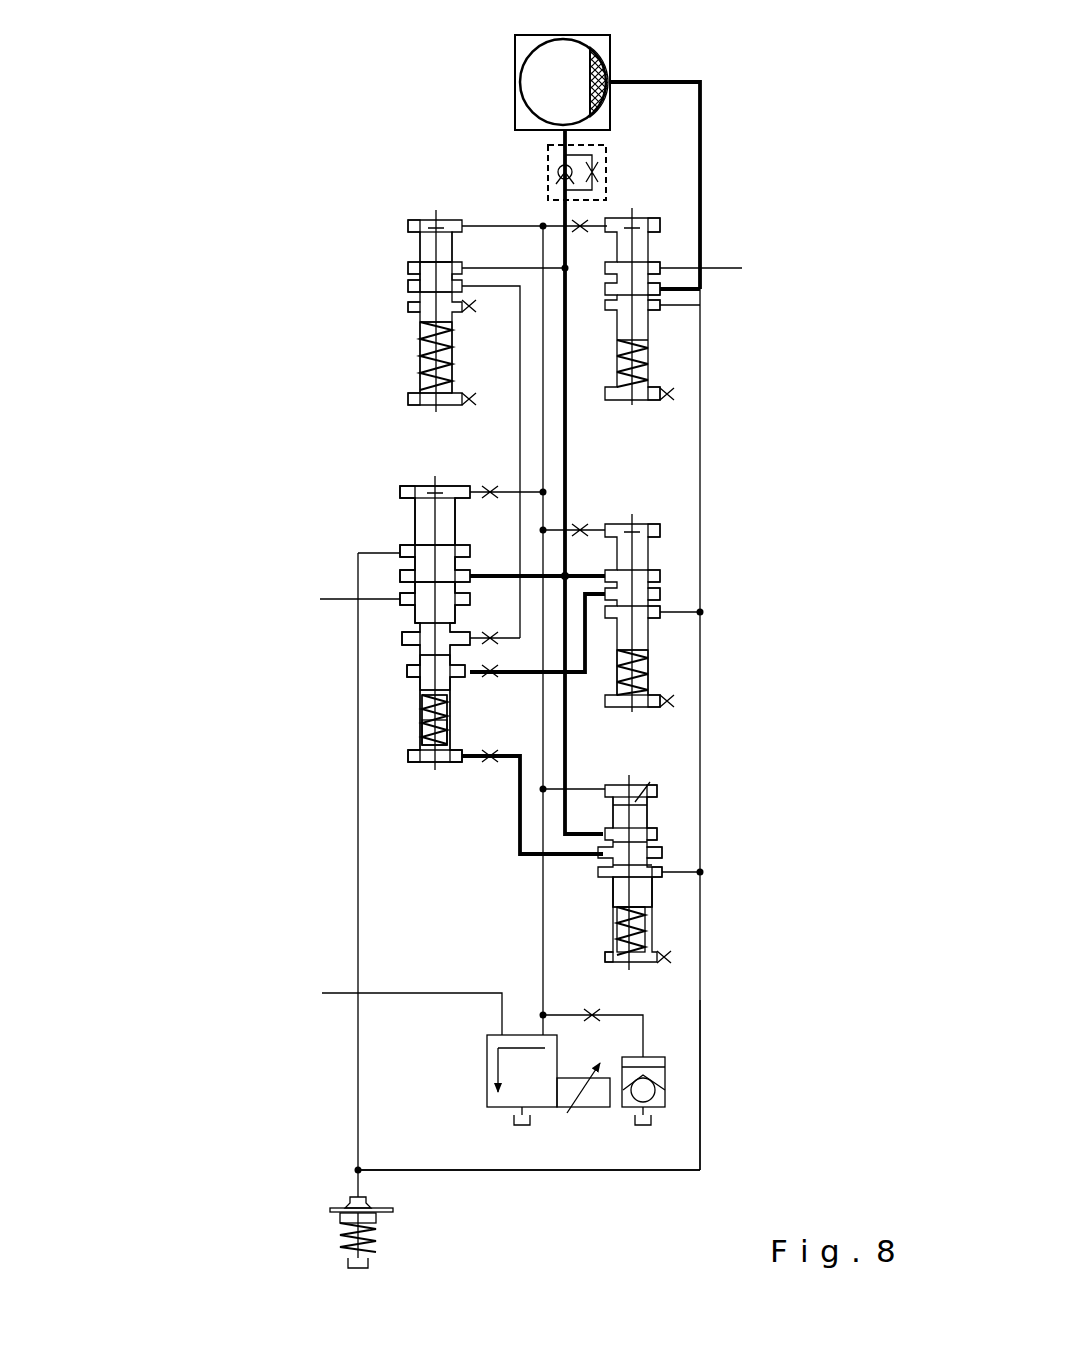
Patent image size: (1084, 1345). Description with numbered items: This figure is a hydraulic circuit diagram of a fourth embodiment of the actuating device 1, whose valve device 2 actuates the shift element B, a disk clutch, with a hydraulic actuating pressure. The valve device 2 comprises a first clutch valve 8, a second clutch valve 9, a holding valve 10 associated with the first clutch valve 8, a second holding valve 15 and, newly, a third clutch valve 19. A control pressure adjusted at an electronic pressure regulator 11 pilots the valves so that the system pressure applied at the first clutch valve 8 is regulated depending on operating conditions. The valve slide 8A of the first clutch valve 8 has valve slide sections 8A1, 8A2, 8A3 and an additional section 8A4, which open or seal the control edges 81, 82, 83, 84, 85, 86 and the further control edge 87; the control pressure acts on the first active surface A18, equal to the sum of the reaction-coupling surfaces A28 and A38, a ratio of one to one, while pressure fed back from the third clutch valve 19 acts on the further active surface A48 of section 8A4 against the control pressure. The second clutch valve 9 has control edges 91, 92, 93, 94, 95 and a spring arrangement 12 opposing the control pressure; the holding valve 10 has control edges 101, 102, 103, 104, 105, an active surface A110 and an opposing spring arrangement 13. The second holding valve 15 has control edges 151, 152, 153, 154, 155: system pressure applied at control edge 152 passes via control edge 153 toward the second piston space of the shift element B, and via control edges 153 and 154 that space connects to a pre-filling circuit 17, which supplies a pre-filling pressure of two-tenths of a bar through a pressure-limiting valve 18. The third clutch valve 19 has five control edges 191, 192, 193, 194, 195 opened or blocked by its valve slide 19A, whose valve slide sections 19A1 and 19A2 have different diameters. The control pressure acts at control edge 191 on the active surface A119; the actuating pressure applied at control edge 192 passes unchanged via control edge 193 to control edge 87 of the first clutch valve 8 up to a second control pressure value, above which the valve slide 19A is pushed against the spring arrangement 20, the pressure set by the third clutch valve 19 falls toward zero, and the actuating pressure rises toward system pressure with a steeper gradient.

The actuating device 1 is at (118, 90).
The valve device 2 is at (383, 275).
The first clutch valve 8 is at (350, 692).
The valve slide 8A is at (407, 615).
The valve slide section 8A1 is at (413, 543).
The valve slide section 8A2 is at (405, 598).
The valve slide section 8A3 is at (420, 688).
The additional valve slide section 8A4 is at (427, 740).
The second clutch valve 9 is at (657, 668).
The holding valve 10 is at (400, 347).
The electronic pressure regulator 11 is at (493, 1058).
The spring arrangement 12 is at (645, 712).
The spring arrangement 13 is at (418, 366).
The second holding valve 15 is at (668, 328).
The pre-filling circuit 17 is at (462, 1166).
The pressure-limiting valve 18 is at (342, 1196).
The third clutch valve 19 is at (706, 922).
The valve slide 19A is at (660, 963).
The valve slide section 19A1 is at (657, 835).
The valve slide section 19A2 is at (615, 895).
The spring arrangement 20 is at (666, 1058).
The control edge 81 is at (425, 527).
The control edge 82 is at (425, 568).
The control edge 83 is at (405, 575).
The control edge 84 is at (425, 593).
The control edge 85 is at (407, 638).
The control edge 86 is at (430, 705).
The further control edge 87 is at (425, 768).
The control edge 91 is at (655, 527).
The control edge 92 is at (660, 576).
The control edge 93 is at (660, 594).
The control edge 94 is at (660, 612).
The control edge 95 is at (655, 705).
The control edge 101 is at (420, 224).
The control edge 102 is at (408, 266).
The control edge 103 is at (408, 285).
The control edge 104 is at (408, 306).
The control edge 105 is at (408, 399).
The first control edge 151 is at (658, 225).
The control edge 152 is at (660, 268).
The third control edge 153 is at (660, 289).
The fourth control edge 154 is at (660, 305).
The control edge 155 is at (660, 393).
The first control edge 191 is at (640, 815).
The second control edge 192 is at (662, 855).
The third control edge 193 is at (662, 874).
The control edge 194 is at (658, 930).
The control edge 195 is at (612, 964).
The first active surface A18 is at (428, 488).
The reaction-coupling surface A28 is at (408, 670).
The reaction-coupling surface A38 is at (410, 757).
The further active surface A48 is at (412, 762).
The active surface A110 is at (407, 224).
The active surface A119 is at (655, 780).
The shift element B is at (614, 52).